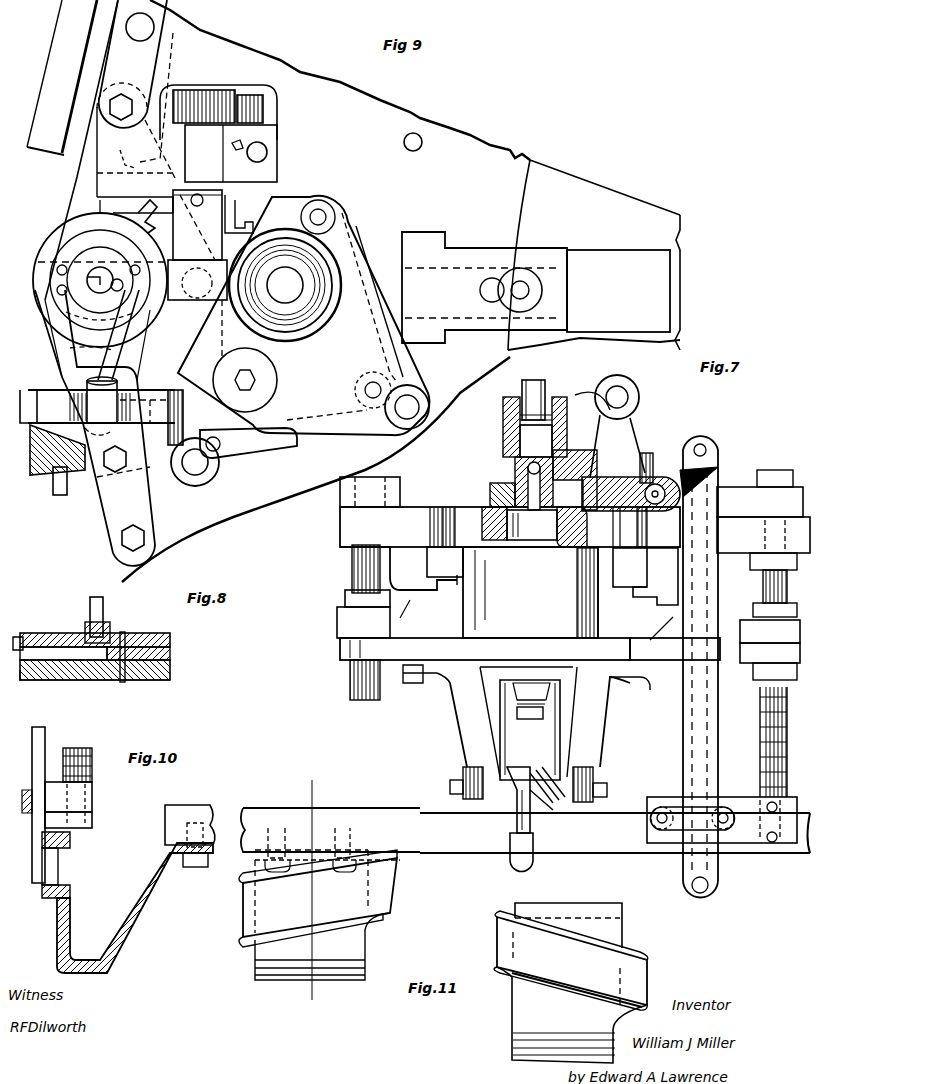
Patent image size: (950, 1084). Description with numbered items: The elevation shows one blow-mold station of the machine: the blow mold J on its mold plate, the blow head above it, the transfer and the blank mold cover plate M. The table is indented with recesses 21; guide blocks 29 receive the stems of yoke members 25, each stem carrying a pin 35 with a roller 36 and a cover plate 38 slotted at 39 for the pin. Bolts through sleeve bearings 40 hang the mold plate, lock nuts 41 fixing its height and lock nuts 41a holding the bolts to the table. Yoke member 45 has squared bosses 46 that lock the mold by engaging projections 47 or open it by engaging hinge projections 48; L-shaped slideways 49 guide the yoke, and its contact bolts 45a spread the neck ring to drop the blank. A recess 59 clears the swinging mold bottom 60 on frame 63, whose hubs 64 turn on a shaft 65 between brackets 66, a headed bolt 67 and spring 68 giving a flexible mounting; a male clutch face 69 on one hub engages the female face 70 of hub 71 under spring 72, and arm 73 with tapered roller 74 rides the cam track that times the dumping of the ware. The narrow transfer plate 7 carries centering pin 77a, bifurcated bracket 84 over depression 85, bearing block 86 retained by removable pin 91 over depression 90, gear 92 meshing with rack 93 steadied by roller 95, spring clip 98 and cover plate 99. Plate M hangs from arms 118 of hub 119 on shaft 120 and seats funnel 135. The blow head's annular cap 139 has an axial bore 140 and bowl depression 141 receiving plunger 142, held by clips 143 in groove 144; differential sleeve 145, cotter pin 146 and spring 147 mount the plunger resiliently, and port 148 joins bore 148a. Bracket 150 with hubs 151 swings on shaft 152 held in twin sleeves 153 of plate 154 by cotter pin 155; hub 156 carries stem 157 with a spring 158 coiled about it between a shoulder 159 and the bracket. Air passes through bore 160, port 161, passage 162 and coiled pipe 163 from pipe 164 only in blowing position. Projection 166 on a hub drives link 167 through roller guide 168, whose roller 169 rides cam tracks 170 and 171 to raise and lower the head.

In FIG. 9, the bracket 7 is at (197, 225).
In FIG. 9, the recesses 21 is at (93, 160).
In FIG. 7, the recesses 21 is at (510, 527).
In FIG. 9, the yoke members 25 is at (372, 232).
In FIG. 9, the guide blocks 29 is at (616, 270).
In FIG. 9, the pin 35 is at (530, 290).
In FIG. 9, the roller 36 is at (505, 298).
In FIG. 9, the cover plate 38 is at (140, 41).
In FIG. 7, the cover plate 38 is at (763, 581).
In FIG. 10, the cover plate 38 is at (92, 750).
In FIG. 9, the longitudinal slot 39 is at (492, 278).
In FIG. 7, the sleeve bearings 40 is at (337, 622).
In FIG. 7, the lock nuts 41 is at (345, 598).
In FIG. 7, the lock nuts 41a is at (340, 548).
In FIG. 9, the yoke member 45 is at (135, 194).
In FIG. 7, the yoke member 45 is at (537, 567).
In FIG. 9, the adjustable contact bolts 45a is at (239, 214).
In FIG. 9, the squared bosses 46 is at (104, 196).
In FIG. 7, the squared bosses 46 is at (612, 585).
In FIG. 7, the squared projections 47 is at (460, 586).
In FIG. 9, the projections 48 is at (148, 222).
In FIG. 7, the L-shaped slideways 49 is at (538, 594).
In FIG. 7, the recess 59 is at (462, 649).
In FIG. 7, the blow mold bottom 60 is at (607, 649).
In FIG. 7, the frame 63 is at (555, 745).
In FIG. 7, the hubs 64 is at (490, 805).
In FIG. 7, the shaft 65 is at (607, 792).
In FIG. 7, the brackets 66 is at (458, 725).
In FIG. 7, the headed bolt 67 is at (530, 722).
In FIG. 7, the helical spring 68 is at (500, 698).
In FIG. 7, the male clutch face 69 is at (500, 808).
In FIG. 7, the female clutch face 70 is at (515, 812).
In FIG. 7, the hub 71 is at (526, 761).
In FIG. 7, the helical spring 72 is at (547, 782).
In FIG. 7, the depending arm 73 is at (523, 830).
In FIG. 7, the tapered roller 74 is at (528, 862).
In FIG. 9, the vertical pin 77a is at (200, 330).
In FIG. 9, the bifurcated bracket 84 is at (203, 476).
In FIG. 9, the depression 85 is at (190, 478).
In FIG. 9, the bearing block 86 is at (231, 153).
In FIG. 9, the depression 90 is at (151, 105).
In FIG. 9, the removable pin 91 is at (248, 159).
In FIG. 9, the gear 92 is at (200, 90).
In FIG. 9, the sliding rack 93 is at (245, 95).
In FIG. 9, the roller 95 is at (265, 108).
In FIG. 9, the U-shape spring clip 98 is at (197, 280).
In FIG. 9, the cover plate 99 is at (191, 222).
In FIG. 9, the arms 118 is at (299, 335).
In FIG. 9, the hub 119 is at (408, 397).
In FIG. 9, the shaft 120 is at (302, 392).
In FIG. 9, the funnel 135 is at (292, 330).
In FIG. 7, the annular cap piece 139 is at (585, 540).
In FIG. 7, the axial bore 140 is at (534, 527).
In FIG. 7, the bowl shaped depression 141 is at (490, 496).
In FIG. 7, the plunger 142 is at (503, 442).
In FIG. 9, the clips 143 is at (100, 280).
In FIG. 7, the clips 143 is at (512, 480).
In FIG. 7, the circumferential groove 144 is at (575, 480).
In FIG. 9, the differential sleeve 145 is at (100, 320).
In FIG. 7, the differential sleeve 145 is at (503, 410).
In FIG. 9, the cotter pin 146 is at (104, 288).
In FIG. 7, the cotter pin 146 is at (530, 390).
In FIG. 7, the helical spring 147 is at (520, 424).
In FIG. 7, the radial port 148 is at (515, 460).
In FIG. 7, the axial bore 148a is at (488, 492).
In FIG. 9, the bifurcated bracket 150 is at (105, 340).
In FIG. 7, the bifurcated bracket 150 is at (580, 410).
In FIG. 9, the hubs 151 is at (27, 391).
In FIG. 9, the shaft 152 is at (94, 398).
In FIG. 7, the shaft 152 is at (656, 468).
In FIG. 8, the shaft 152 is at (170, 657).
In FIG. 9, the twin sleeves 153 is at (102, 435).
In FIG. 9, the plate 154 is at (170, 60).
In FIG. 7, the plate 154 is at (740, 485).
In FIG. 9, the cotter pin 155 is at (132, 398).
In FIG. 8, the cotter pin 155 is at (126, 632).
In FIG. 9, the hub 156 is at (102, 400).
In FIG. 7, the hub 156 is at (652, 453).
In FIG. 7, the radial stem 157 is at (614, 527).
In FIG. 9, the helical spring 158 is at (83, 353).
In FIG. 7, the helical spring 158 is at (620, 440).
In FIG. 7, the circumferential shoulder 159 is at (630, 445).
In FIG. 8, the bore 160 is at (95, 685).
In FIG. 8, the radial port 161 is at (108, 625).
In FIG. 7, the passage 162 is at (654, 483).
In FIG. 8, the passage 162 is at (118, 620).
In FIG. 9, the pipe 163 is at (122, 348).
In FIG. 7, the pipe 163 is at (638, 385).
In FIG. 8, the pipe 163 is at (88, 600).
In FIG. 9, the pipe 164 is at (48, 450).
In FIG. 8, the pipe 164 is at (15, 637).
In FIG. 9, the radial projection 166 is at (55, 485).
In FIG. 7, the radial projection 166 is at (685, 440).
In FIG. 7, the depending link 167 is at (712, 532).
In FIG. 10, the depending link 167 is at (45, 740).
In FIG. 9, the roller guide 168 is at (100, 515).
In FIG. 7, the roller guide 168 is at (710, 818).
In FIG. 7, the roller 169 is at (672, 885).
In FIG. 10, the roller 169 is at (70, 865).
In FIG. 9, the cam track 170 is at (62, 77).
In FIG. 10, the cam track 170 is at (58, 880).
In FIG. 11, the cam track 171 is at (571, 983).
In FIG. 7, the blow mold J is at (530, 592).
In FIG. 9, the cover plate M is at (303, 315).